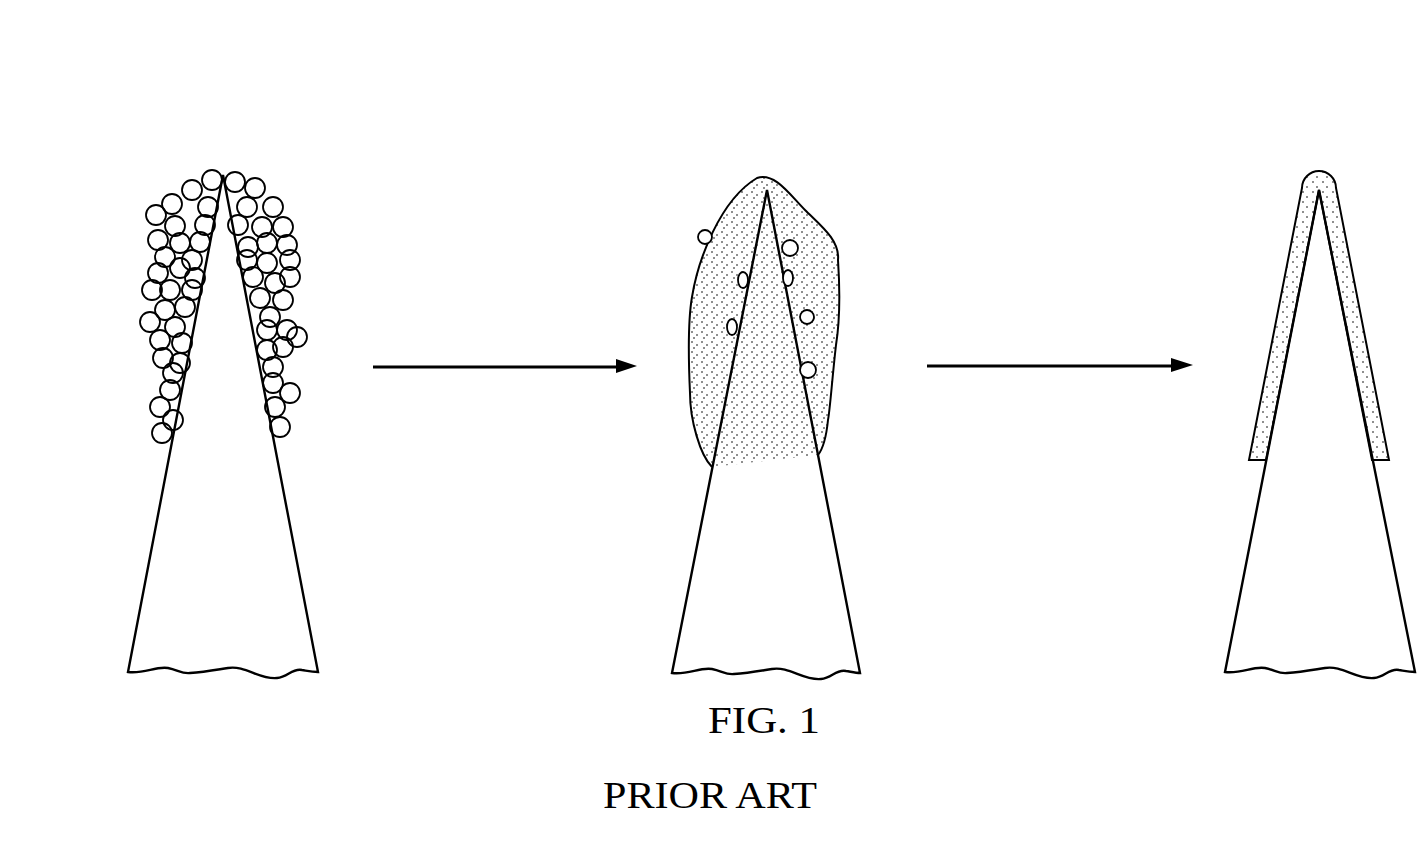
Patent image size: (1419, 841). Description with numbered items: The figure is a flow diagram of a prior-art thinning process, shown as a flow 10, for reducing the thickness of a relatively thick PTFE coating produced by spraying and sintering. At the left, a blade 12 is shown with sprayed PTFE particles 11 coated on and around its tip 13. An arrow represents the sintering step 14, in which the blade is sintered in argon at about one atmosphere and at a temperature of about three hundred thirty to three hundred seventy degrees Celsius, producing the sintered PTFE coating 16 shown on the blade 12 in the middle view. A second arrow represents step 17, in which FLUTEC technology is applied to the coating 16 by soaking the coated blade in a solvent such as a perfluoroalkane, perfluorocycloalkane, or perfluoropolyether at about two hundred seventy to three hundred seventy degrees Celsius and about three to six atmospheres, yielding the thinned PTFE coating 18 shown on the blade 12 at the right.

The flow 10 is at (1059, 101).
The sprayed PTFE particles 11 is at (178, 168).
The blade 12 is at (148, 560).
The tip 13 is at (260, 168).
The sintering step 14 is at (500, 364).
The sintered PTFE coating 16 is at (731, 183).
The FLUTEC step 17 is at (1080, 364).
The thinned PTFE coating 18 is at (1330, 163).